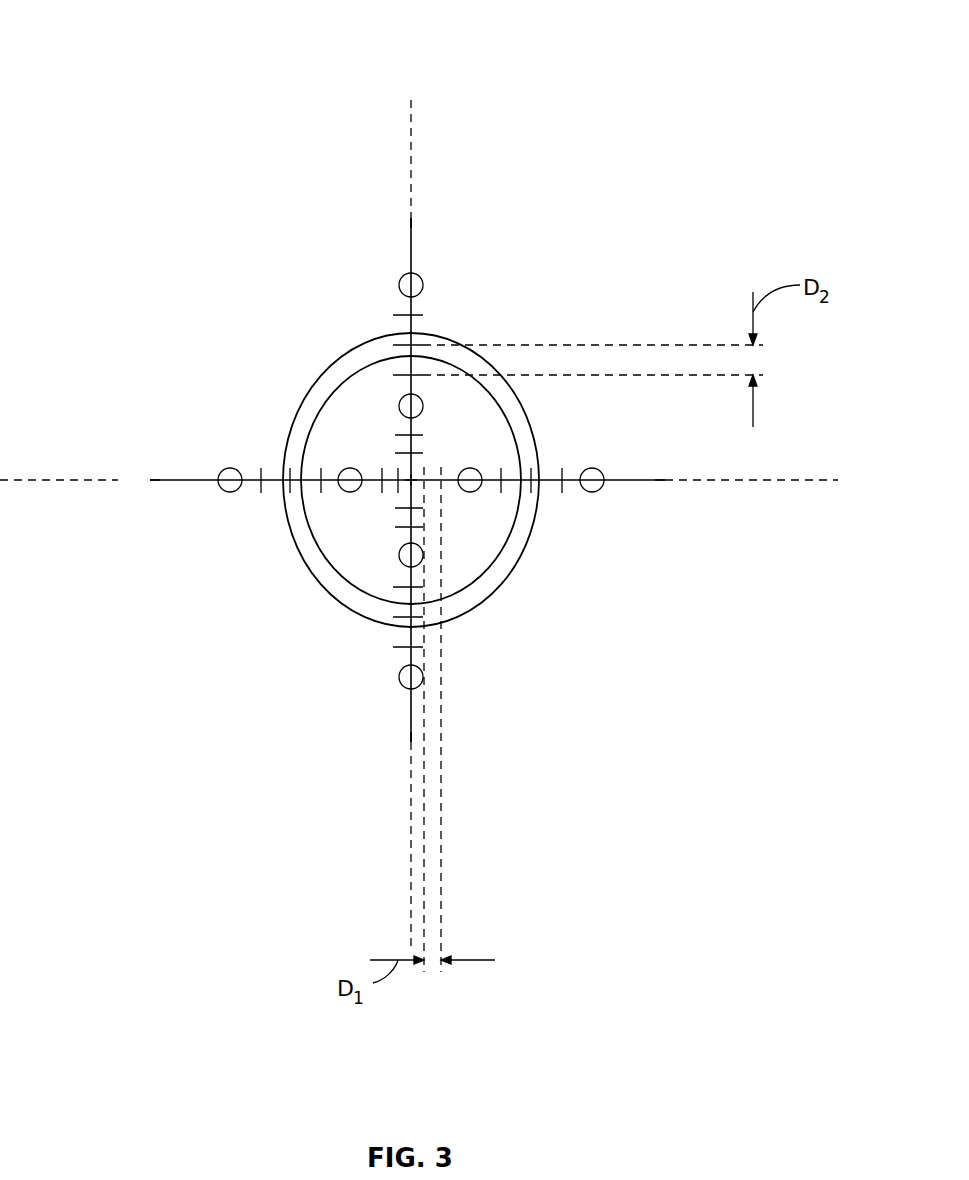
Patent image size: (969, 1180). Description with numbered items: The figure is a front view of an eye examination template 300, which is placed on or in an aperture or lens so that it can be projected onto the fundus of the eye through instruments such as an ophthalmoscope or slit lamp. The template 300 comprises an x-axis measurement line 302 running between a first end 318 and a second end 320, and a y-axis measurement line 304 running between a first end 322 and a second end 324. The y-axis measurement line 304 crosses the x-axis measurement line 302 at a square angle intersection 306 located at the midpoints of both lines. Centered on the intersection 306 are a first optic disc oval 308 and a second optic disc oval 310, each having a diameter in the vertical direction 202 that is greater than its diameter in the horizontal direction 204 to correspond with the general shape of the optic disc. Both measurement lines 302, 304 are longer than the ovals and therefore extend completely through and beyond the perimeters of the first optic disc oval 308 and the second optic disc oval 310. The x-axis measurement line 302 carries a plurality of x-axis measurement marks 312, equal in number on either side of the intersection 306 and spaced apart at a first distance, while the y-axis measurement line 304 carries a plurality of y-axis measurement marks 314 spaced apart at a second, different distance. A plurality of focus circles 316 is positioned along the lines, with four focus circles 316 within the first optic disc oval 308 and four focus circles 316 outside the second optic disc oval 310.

The eye examination template 300 is at (105, 38).
The vertical direction 202 is at (411, 148).
The horizontal direction 204 is at (760, 480).
The x-axis measurement line 302 is at (617, 482).
The y-axis measurement line 304 is at (411, 697).
The intersection 306 is at (413, 478).
The first optic disc oval 308 is at (345, 360).
The second optic disc oval 310 is at (451, 338).
The x-axis measurement marks 312 is at (398, 468).
The y-axis measurement marks 314 is at (393, 375).
The focus circles 316 is at (421, 277).
The first end 318 is at (150, 481).
The second end 320 is at (665, 481).
The first end 322 is at (411, 742).
The second end 324 is at (411, 218).